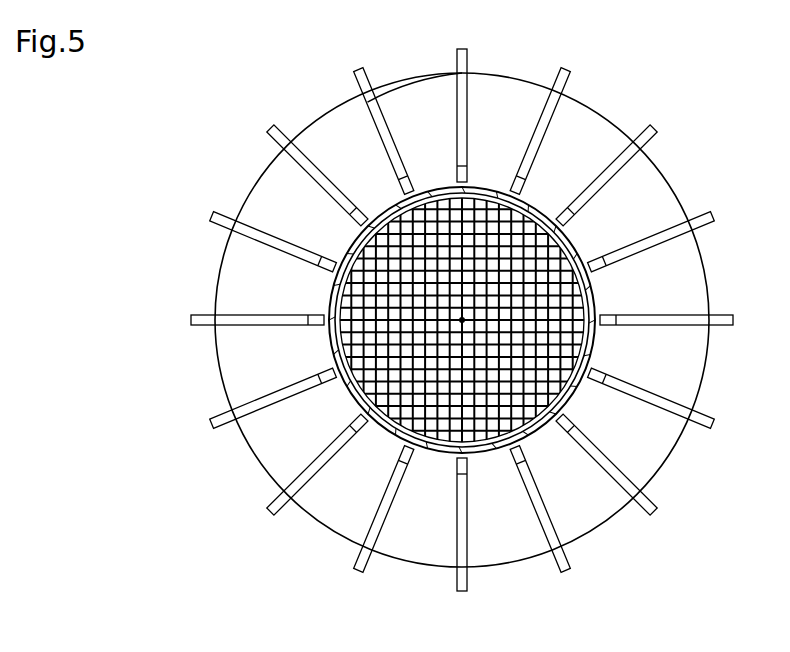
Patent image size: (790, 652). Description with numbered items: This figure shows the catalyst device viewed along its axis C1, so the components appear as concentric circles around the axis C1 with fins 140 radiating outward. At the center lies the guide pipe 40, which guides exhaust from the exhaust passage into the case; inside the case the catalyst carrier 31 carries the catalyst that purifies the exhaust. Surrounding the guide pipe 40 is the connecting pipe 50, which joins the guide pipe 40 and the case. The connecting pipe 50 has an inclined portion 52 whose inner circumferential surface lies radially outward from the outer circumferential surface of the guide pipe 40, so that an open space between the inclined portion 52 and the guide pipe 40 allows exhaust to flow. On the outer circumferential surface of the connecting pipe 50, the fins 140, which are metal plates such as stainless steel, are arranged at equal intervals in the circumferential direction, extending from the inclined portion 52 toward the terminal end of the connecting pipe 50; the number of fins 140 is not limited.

The connecting pipe 50 is at (503, 74).
The inclined portion 52 is at (417, 94).
The fins 140 is at (579, 87).
The catalyst carrier 31 is at (547, 278).
The guide pipe 40 is at (372, 262).
The axis C1 is at (464, 318).